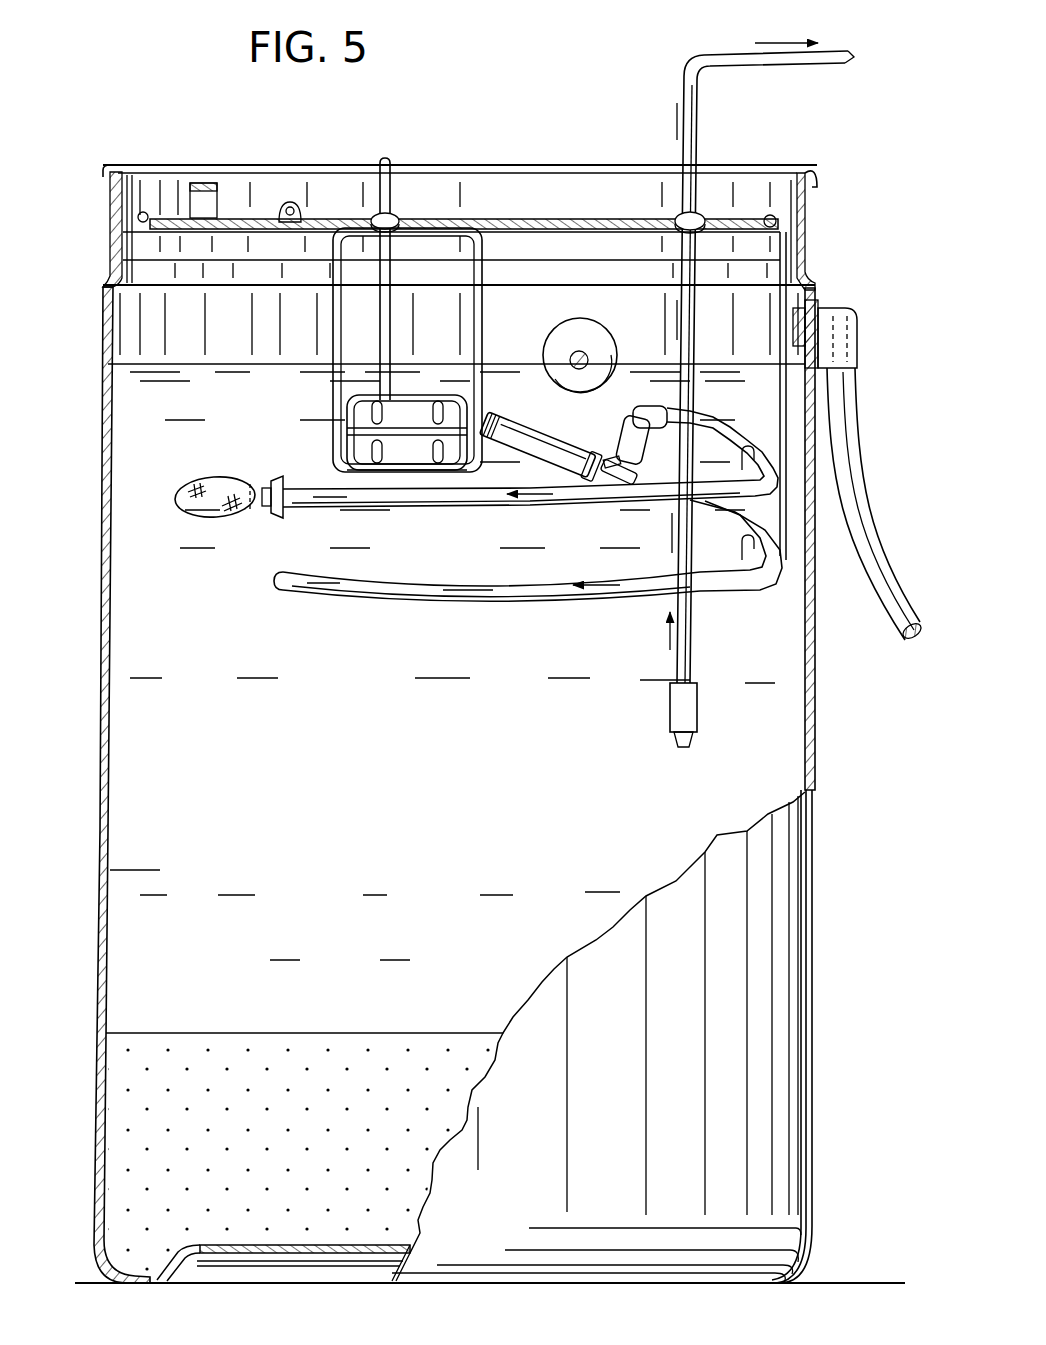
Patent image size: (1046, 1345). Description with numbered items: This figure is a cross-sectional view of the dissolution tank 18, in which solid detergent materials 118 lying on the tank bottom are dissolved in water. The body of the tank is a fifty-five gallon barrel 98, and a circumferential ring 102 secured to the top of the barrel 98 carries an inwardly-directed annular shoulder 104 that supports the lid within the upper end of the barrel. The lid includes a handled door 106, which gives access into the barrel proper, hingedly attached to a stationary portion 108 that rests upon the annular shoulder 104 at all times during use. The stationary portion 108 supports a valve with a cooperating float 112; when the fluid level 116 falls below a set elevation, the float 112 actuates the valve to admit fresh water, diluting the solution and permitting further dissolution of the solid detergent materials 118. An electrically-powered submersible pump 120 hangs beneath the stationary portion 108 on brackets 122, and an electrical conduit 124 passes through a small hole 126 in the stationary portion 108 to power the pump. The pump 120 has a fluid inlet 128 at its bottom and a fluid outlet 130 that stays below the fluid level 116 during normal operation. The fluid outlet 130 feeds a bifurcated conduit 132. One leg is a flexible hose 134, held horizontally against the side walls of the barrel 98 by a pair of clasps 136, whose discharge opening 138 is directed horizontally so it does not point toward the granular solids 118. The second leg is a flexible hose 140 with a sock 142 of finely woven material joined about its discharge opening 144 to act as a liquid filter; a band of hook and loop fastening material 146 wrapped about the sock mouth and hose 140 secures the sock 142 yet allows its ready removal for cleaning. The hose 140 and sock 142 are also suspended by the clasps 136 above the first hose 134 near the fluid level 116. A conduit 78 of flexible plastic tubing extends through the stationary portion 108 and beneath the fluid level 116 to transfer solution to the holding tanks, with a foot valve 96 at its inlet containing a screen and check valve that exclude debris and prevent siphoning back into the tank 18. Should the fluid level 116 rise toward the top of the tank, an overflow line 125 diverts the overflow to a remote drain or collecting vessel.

The dissolution tank 18 is at (147, 125).
The conduit 78 is at (778, 65).
The foot valve 96 is at (688, 703).
The barrel 98 is at (100, 612).
The circumferential ring 102 is at (808, 207).
The annular shoulder 104 is at (150, 238).
The handled door 106 is at (262, 219).
The stationary portion 108 is at (578, 219).
The float 112 is at (590, 343).
The fluid level 116 is at (266, 364).
The solid detergent materials 118 is at (112, 1058).
The submersible pump 120 is at (417, 398).
The brackets 122 is at (333, 333).
The electrical conduit 124 is at (391, 161).
The overflow line 125 is at (852, 475).
The small hole 126 is at (391, 238).
The fluid inlet 128 is at (414, 478).
The fluid outlet 130 is at (485, 412).
The bifurcated conduit 132 is at (610, 438).
The flexible hose 134 is at (508, 600).
The clasps 136 is at (780, 402).
The discharge opening 138 is at (270, 580).
The flexible hose 140 is at (533, 500).
The sock 142 is at (202, 512).
The discharge opening 144 is at (232, 488).
The band of hook and loop fastening material 146 is at (270, 486).